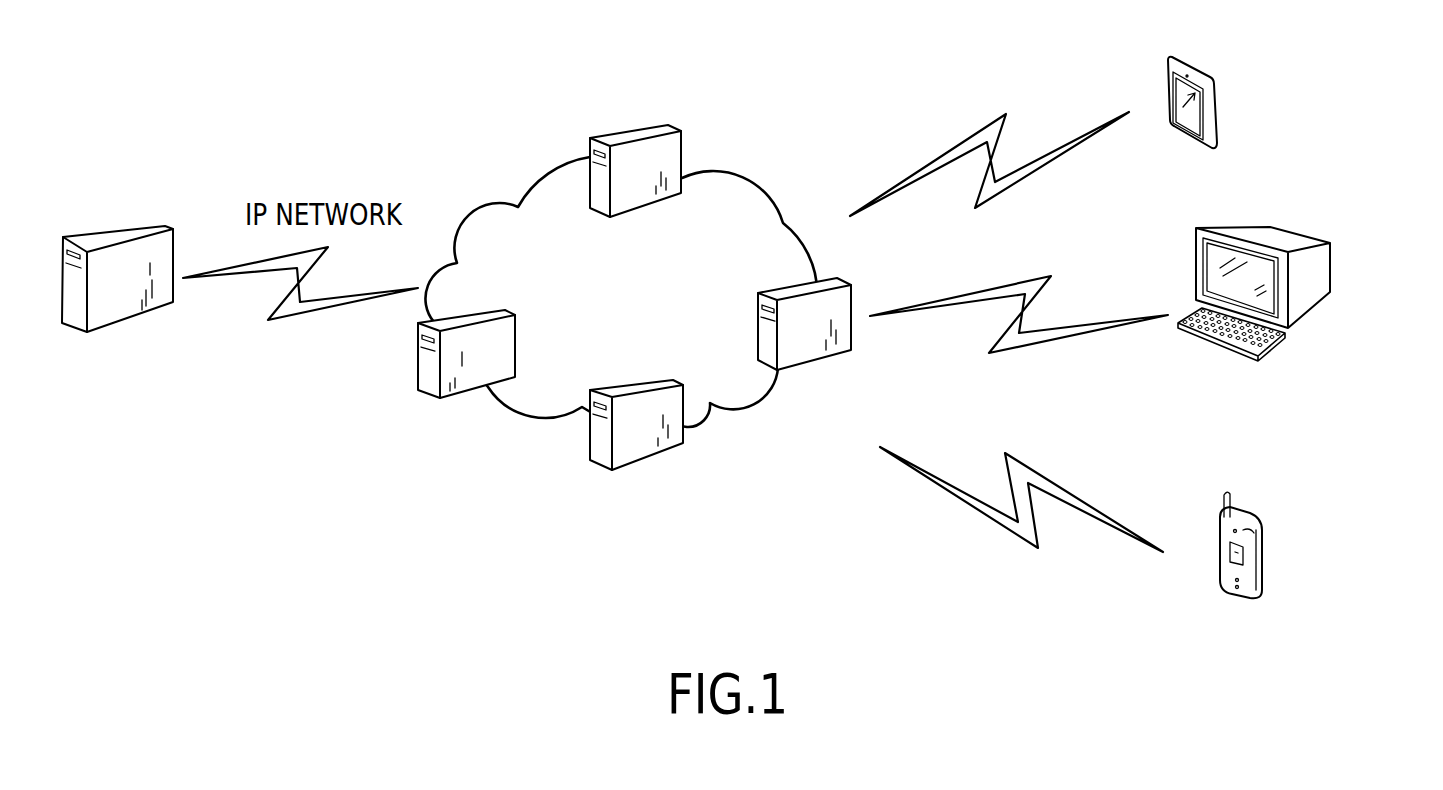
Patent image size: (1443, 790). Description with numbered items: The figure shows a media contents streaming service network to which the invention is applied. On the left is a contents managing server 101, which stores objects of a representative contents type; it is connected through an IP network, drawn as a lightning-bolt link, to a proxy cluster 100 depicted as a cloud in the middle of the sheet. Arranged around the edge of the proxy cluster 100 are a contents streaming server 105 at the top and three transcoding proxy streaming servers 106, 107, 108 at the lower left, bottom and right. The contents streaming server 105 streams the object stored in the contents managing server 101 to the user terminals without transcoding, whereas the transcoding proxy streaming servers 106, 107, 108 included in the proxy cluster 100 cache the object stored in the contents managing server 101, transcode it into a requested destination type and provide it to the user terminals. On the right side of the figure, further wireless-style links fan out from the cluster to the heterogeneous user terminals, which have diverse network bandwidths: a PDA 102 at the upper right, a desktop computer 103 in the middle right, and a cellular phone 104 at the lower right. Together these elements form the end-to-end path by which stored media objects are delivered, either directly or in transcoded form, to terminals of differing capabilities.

The proxy cluster 100 is at (738, 172).
The contents managing server 101 is at (125, 227).
The PDA 102 is at (1218, 110).
The desktop computer 103 is at (1302, 290).
The cellular phone 104 is at (1245, 555).
The contents streaming server 105 is at (648, 153).
The transcoding proxy streaming server 106 is at (443, 400).
The transcoding proxy streaming server 107 is at (627, 445).
The transcoding proxy streaming server 108 is at (807, 342).